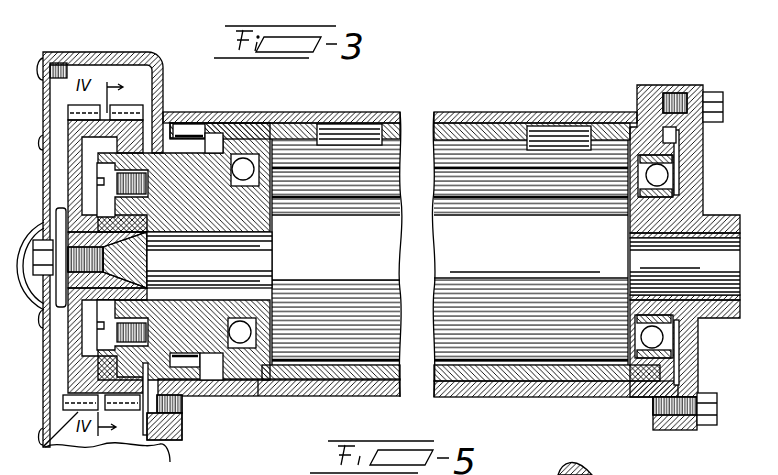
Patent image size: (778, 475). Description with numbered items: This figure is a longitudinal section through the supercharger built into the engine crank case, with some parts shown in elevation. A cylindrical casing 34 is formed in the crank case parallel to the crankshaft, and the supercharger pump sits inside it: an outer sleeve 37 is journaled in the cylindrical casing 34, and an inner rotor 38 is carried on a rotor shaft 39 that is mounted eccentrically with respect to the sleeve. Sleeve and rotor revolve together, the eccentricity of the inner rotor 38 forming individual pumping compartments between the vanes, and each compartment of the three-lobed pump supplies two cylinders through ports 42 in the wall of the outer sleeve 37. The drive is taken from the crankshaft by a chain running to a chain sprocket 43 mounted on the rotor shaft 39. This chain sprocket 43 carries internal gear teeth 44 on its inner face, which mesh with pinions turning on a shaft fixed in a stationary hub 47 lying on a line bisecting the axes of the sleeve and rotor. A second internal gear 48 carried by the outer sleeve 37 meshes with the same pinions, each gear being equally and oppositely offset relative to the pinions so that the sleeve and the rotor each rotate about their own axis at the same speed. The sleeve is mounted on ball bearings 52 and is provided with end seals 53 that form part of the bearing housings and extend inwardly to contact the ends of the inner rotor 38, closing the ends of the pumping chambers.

The cylindrical casing 34 is at (370, 117).
The outer sleeve 37 is at (482, 130).
The inner rotor 38 is at (450, 252).
The rotor shaft 39 is at (443, 266).
The ports 42 is at (583, 137).
The chain sprocket 43 is at (42, 448).
The internal gear teeth 44 is at (167, 446).
The stationary hub 47 is at (168, 160).
The second internal gear 48 is at (212, 363).
The ball bearings 52 is at (246, 160).
The end seals 53 is at (634, 186).